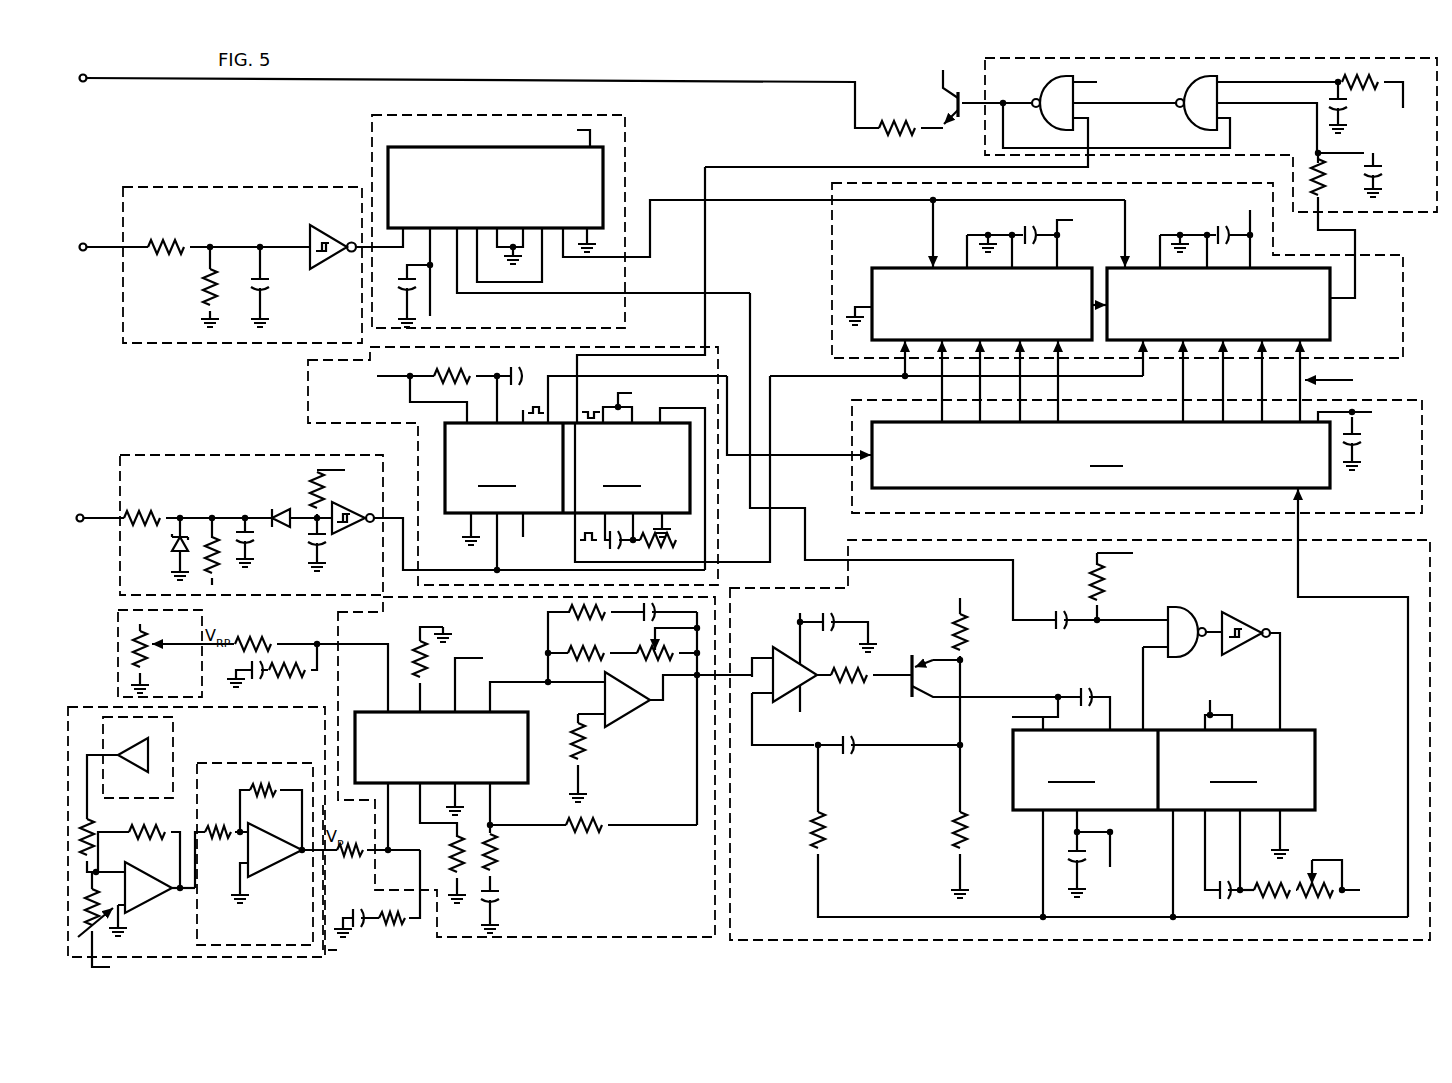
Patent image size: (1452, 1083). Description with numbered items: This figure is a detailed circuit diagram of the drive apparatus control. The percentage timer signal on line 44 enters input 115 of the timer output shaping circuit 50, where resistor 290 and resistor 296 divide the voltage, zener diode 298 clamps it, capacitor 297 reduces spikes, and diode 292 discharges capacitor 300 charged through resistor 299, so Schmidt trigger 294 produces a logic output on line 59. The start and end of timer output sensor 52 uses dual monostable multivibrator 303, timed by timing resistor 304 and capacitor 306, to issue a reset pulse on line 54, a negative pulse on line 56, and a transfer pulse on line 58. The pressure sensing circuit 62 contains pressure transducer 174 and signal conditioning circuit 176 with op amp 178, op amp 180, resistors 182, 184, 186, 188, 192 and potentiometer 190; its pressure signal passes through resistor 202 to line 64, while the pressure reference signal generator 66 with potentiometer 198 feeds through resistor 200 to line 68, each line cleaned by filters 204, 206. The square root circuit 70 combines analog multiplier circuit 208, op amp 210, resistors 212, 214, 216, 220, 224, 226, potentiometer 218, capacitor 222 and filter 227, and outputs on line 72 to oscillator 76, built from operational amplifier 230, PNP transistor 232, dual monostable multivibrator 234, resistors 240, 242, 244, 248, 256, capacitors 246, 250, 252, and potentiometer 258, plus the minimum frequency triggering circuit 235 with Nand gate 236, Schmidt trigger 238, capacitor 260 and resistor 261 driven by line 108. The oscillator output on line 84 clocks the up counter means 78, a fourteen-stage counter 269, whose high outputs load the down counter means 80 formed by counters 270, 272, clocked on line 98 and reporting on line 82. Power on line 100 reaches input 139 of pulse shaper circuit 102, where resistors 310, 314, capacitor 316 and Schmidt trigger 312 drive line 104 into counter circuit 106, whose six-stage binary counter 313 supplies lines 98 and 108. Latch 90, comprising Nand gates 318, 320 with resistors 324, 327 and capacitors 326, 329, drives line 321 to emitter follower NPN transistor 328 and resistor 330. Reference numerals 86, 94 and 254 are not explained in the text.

The line 44 is at (93, 522).
The timer output shaping circuit 50 is at (169, 454).
The start and end of timer output sensor 52 is at (308, 391).
The line 54 is at (805, 456).
The line 56 is at (706, 278).
The line 58 is at (812, 378).
The line 59 is at (430, 570).
The pressure sensing circuit 62 is at (325, 945).
The line 64 is at (358, 842).
The pressure reference signal generator 66 is at (118, 682).
The line 68 is at (338, 638).
The square root circuit 70 is at (637, 938).
The line 72 is at (728, 696).
The oscillator 76 is at (1123, 940).
The up counter means 78 is at (1427, 409).
The down counter means 80 is at (1403, 331).
The line 82 is at (1357, 247).
The line 84 is at (1298, 524).
The preset lines 86 is at (1343, 379).
The latch 90 is at (1187, 58).
The input line 94 is at (172, 79).
The line 98 is at (753, 200).
The line 100 is at (96, 252).
The pulse shaper circuit 102 is at (265, 186).
The line 104 is at (359, 243).
The counter circuit 106 is at (372, 152).
The line 108 is at (805, 523).
The input 115 is at (82, 513).
The input 139 is at (84, 240).
The pressure transducer 174 is at (173, 750).
The signal conditioning circuit 176 is at (292, 763).
The op amp 178 is at (160, 897).
The op amp 180 is at (278, 867).
The resistor 182 is at (87, 752).
The resistor 184 is at (230, 836).
The negative feedback resistor 186 is at (150, 838).
The negative feedback resistor 188 is at (266, 790).
The potentiometer 190 is at (119, 928).
The resistor 192 is at (113, 870).
The potentiometer 198 is at (119, 627).
The resistor 200 is at (273, 641).
The resistor 202 is at (352, 857).
The filter 204 is at (277, 684).
The filter 206 is at (373, 936).
The analog multiplier circuit 208 is at (377, 712).
The op amp 210 is at (631, 717).
The resistor 212 is at (448, 857).
The resistor 214 is at (450, 642).
The resistor 216 is at (585, 759).
The potentiometer 218 is at (633, 712).
The resistor 220 is at (576, 663).
The capacitor 222 is at (644, 616).
The resistor 224 is at (572, 612).
The resistor 226 is at (582, 829).
The filter 227 is at (508, 882).
The operational amplifier 230 is at (772, 648).
The PNP transistor 232 is at (902, 688).
The dual monostable multivibrator 234 is at (1315, 752).
The minimum frequency triggering circuit 235 is at (1272, 622).
The Nand gate 236 is at (1190, 607).
The Schmidt trigger 238 is at (1250, 612).
The resistor 240 is at (876, 660).
The resistor 242 is at (959, 626).
The resistor 244 is at (950, 839).
The capacitor 246 is at (867, 737).
The resistor 248 is at (808, 834).
The capacitor 250 is at (1088, 688).
The filtering capacitor 252 is at (1069, 853).
The capacitor 254 is at (1237, 902).
The resistor 256 is at (1273, 885).
The potentiometer 258 is at (1340, 855).
The capacitor 260 is at (1052, 618).
The resistor 261 is at (1103, 582).
The fourteen-stage counter 269 is at (1138, 414).
The binary up/down counter 270 is at (895, 268).
The binary up/down counter 272 is at (1142, 265).
The resistor 290 is at (152, 511).
The diode 292 is at (280, 505).
The Schmidt trigger 294 is at (353, 510).
The resistor 296 is at (237, 543).
The capacitor 297 is at (232, 516).
The zener diode 298 is at (175, 553).
The resistor 299 is at (311, 490).
The capacitor 300 is at (323, 539).
The dual stage monostable multivibrator 303 is at (445, 452).
The timing resistor 304 is at (431, 372).
The capacitor 306 is at (507, 369).
The resistor 310 is at (168, 239).
The Schmidt trigger 312 is at (308, 234).
The six-stage binary counter 313 is at (511, 186).
The resistor 314 is at (201, 290).
The capacitor 316 is at (273, 283).
The Nand gate 318 is at (1189, 127).
The Nand gate 320 is at (1055, 131).
The line 321 is at (973, 103).
The resistor 324 is at (1370, 89).
The capacitor 326 is at (1343, 113).
The resistor 327 is at (1314, 152).
The emitter follower NPN transistor 328 is at (942, 103).
The capacitor 329 is at (1377, 155).
The resistor 330 is at (913, 131).